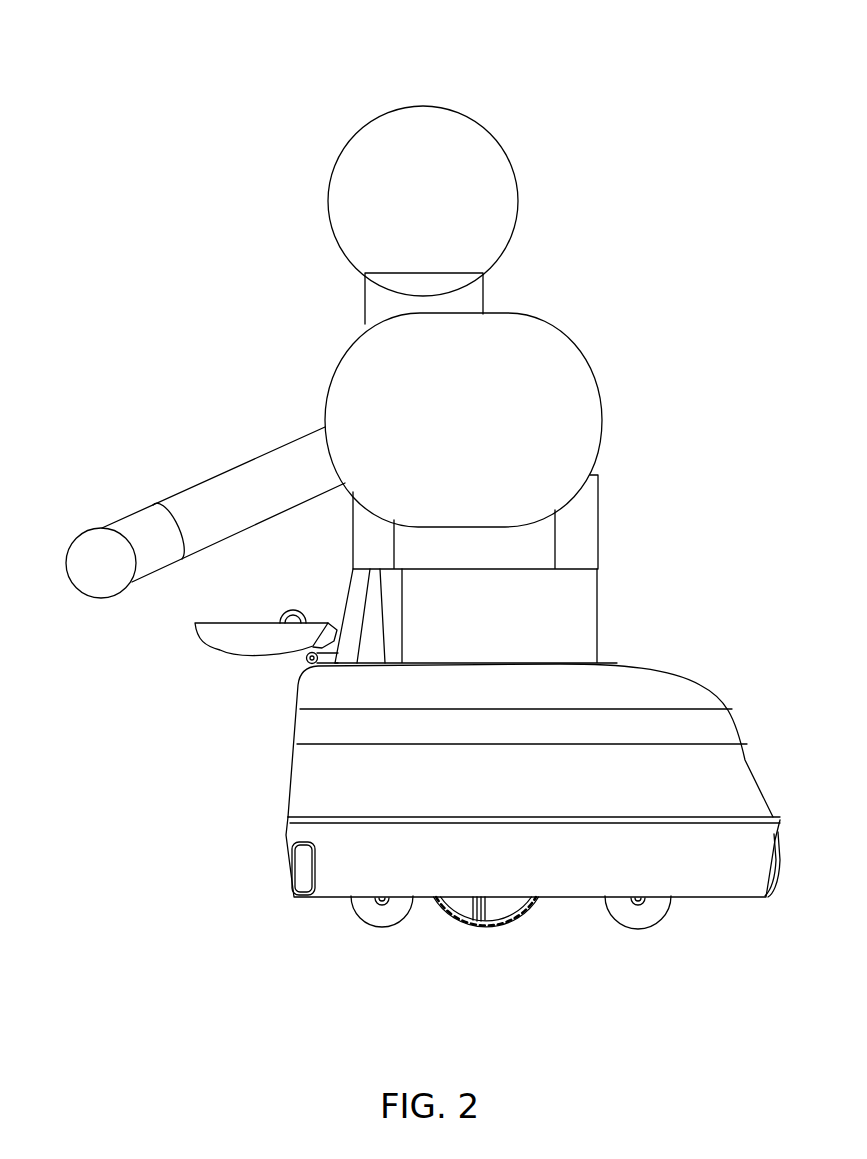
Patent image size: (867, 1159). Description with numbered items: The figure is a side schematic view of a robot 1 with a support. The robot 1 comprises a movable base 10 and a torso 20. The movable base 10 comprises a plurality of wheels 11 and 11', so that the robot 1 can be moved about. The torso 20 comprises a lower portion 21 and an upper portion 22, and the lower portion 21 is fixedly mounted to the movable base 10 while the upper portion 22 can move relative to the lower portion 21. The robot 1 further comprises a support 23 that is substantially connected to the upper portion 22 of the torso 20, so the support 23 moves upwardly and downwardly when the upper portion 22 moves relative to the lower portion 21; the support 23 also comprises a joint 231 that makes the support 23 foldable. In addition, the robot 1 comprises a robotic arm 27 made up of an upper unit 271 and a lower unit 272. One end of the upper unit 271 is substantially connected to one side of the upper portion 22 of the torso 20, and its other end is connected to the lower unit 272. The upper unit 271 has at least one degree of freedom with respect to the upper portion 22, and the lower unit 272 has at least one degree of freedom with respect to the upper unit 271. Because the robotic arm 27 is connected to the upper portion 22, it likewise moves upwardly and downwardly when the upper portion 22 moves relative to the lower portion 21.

The robot 1 is at (672, 148).
The movable base 10 is at (715, 860).
The wheel 11 is at (500, 940).
The wheel 11' is at (538, 940).
The torso 20 is at (615, 365).
The lower portion 21 is at (580, 617).
The upper portion 22 is at (537, 358).
The support 23 is at (230, 642).
The joint 231 is at (287, 617).
The robotic arm 27 is at (215, 438).
The upper unit 271 is at (220, 497).
The lower unit 272 is at (138, 530).